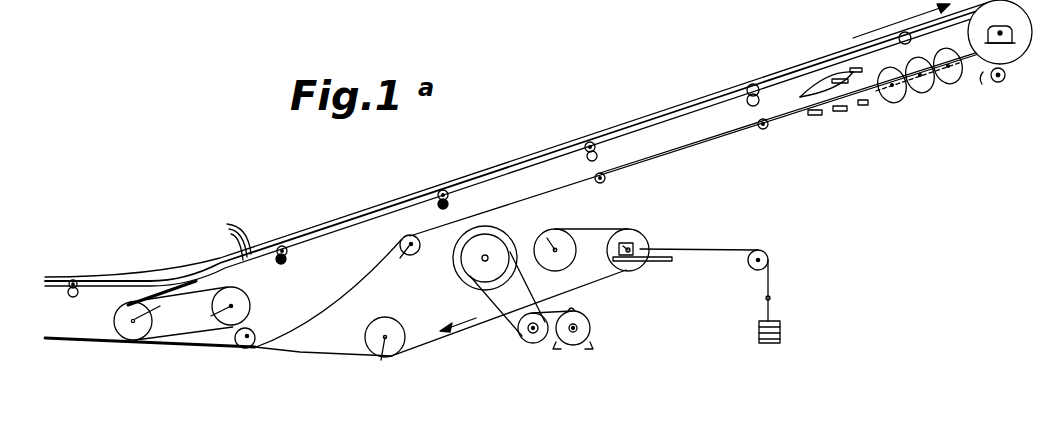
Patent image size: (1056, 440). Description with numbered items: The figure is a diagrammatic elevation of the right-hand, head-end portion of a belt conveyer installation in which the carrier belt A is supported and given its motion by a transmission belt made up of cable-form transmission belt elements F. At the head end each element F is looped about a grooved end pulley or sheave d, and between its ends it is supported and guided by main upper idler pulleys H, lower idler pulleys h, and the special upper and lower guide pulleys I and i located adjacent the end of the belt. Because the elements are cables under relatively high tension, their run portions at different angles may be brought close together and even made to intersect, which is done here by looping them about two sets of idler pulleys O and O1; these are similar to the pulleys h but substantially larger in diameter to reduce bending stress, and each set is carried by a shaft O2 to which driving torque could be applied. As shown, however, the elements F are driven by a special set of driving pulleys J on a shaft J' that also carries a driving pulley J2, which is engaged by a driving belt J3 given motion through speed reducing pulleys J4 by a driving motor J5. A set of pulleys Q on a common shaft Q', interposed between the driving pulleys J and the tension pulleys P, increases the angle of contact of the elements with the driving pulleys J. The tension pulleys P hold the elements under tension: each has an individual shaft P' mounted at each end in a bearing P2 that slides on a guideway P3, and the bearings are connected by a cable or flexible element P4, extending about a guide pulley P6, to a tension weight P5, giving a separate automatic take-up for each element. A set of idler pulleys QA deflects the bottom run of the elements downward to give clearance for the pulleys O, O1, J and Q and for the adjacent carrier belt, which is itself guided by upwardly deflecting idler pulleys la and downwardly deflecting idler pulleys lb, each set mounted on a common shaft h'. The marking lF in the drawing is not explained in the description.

The carrier belt A is at (320, 322).
The main upper idler pulleys H is at (68, 290).
The transmission belt elements F is at (229, 238).
The idler pulleys O is at (116, 318).
The idler pulleys O1 is at (244, 300).
The shaft O2 is at (182, 312).
The downwardly deflecting idler pulleys lb is at (236, 347).
The lower rail portion lF is at (301, 349).
The common shaft h' is at (327, 302).
The upwardly deflecting idler pulleys la is at (399, 242).
The lower idler pulleys h is at (687, 155).
The driving pulleys J is at (486, 249).
The shaft J' is at (453, 266).
The driving pulley J2 is at (472, 277).
The driving belt J3 is at (518, 296).
The speed reducing pulleys J4 is at (519, 332).
The driving motor J5 is at (591, 321).
The pulleys Q is at (510, 280).
The common shaft Q' is at (468, 298).
The idler pulleys QA is at (380, 325).
The tension pulleys P is at (633, 240).
The shaft P' is at (614, 229).
The bearing P2 is at (618, 251).
The guideway P3 is at (650, 262).
The cable or flexible element P4 is at (707, 249).
The tension weight P5 is at (759, 331).
The guide pulley P6 is at (770, 259).
The upper guide pulleys I is at (805, 92).
The lower guide pulleys i is at (840, 112).
The grooved end pulley d is at (932, 94).